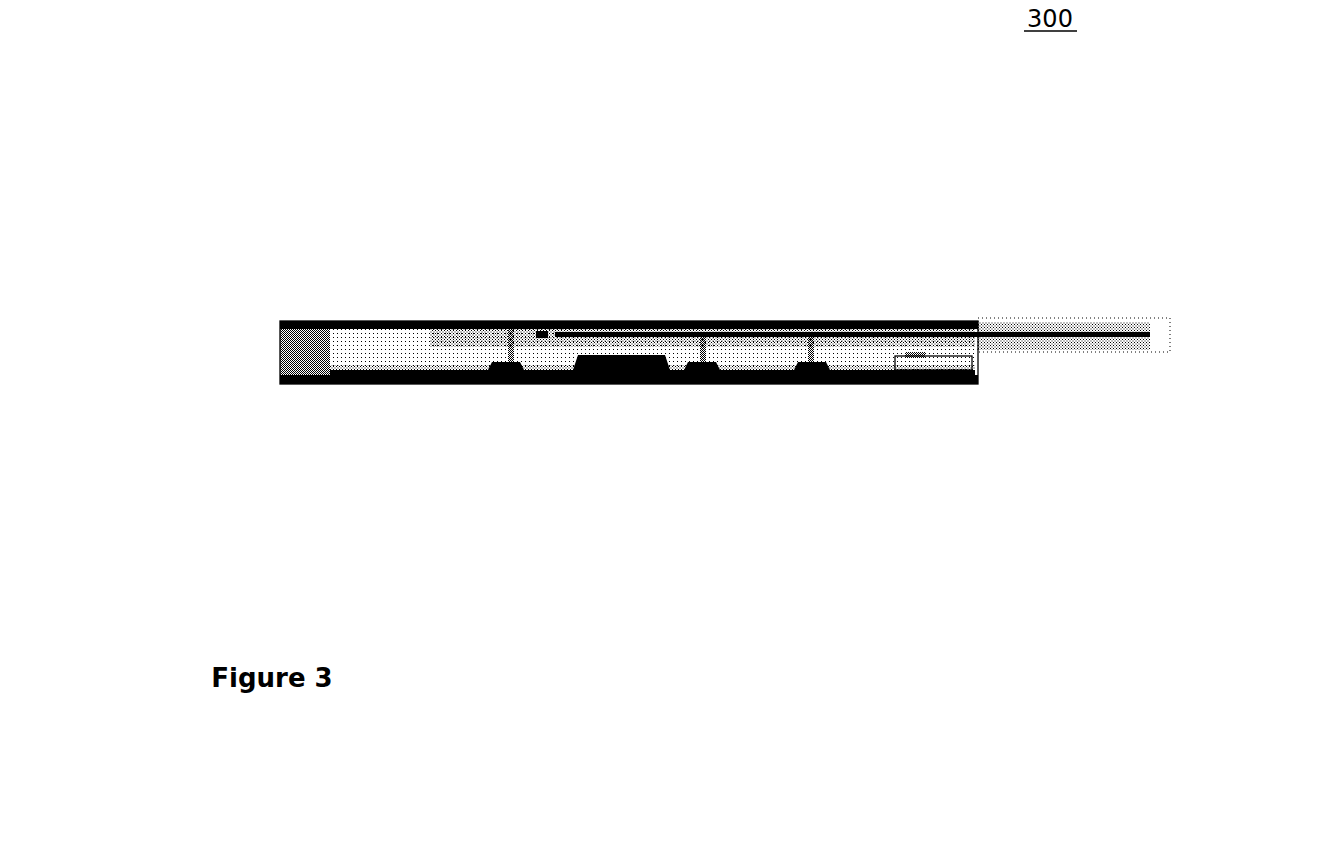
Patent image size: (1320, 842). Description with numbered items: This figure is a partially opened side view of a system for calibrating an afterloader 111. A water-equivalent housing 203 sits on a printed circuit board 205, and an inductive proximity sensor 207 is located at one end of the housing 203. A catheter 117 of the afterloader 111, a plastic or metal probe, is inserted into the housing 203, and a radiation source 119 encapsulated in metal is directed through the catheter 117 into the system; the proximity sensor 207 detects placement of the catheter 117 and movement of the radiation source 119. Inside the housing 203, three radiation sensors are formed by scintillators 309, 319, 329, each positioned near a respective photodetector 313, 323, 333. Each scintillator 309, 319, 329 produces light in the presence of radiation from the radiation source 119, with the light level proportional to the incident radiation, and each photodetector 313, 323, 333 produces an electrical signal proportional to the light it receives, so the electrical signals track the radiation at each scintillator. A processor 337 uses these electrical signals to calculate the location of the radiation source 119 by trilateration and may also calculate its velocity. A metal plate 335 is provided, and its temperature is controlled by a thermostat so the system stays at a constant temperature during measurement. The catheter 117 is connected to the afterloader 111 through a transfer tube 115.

The water-equivalent housing 203 is at (357, 328).
The proximity sensor 207 is at (280, 348).
The printed circuit board 205 is at (553, 385).
The catheter 117 is at (520, 318).
The radiation source 119 is at (543, 318).
The transfer tube 115 is at (1122, 346).
The metal plate 335 is at (878, 387).
The processor 337 is at (640, 387).
The scintillator 309 is at (508, 328).
The scintillator 319 is at (704, 328).
The scintillator 329 is at (816, 328).
The photodetector 313 is at (505, 385).
The photodetector 323 is at (688, 387).
The photodetector 333 is at (799, 387).
The afterloader 111 is at (1240, 333).